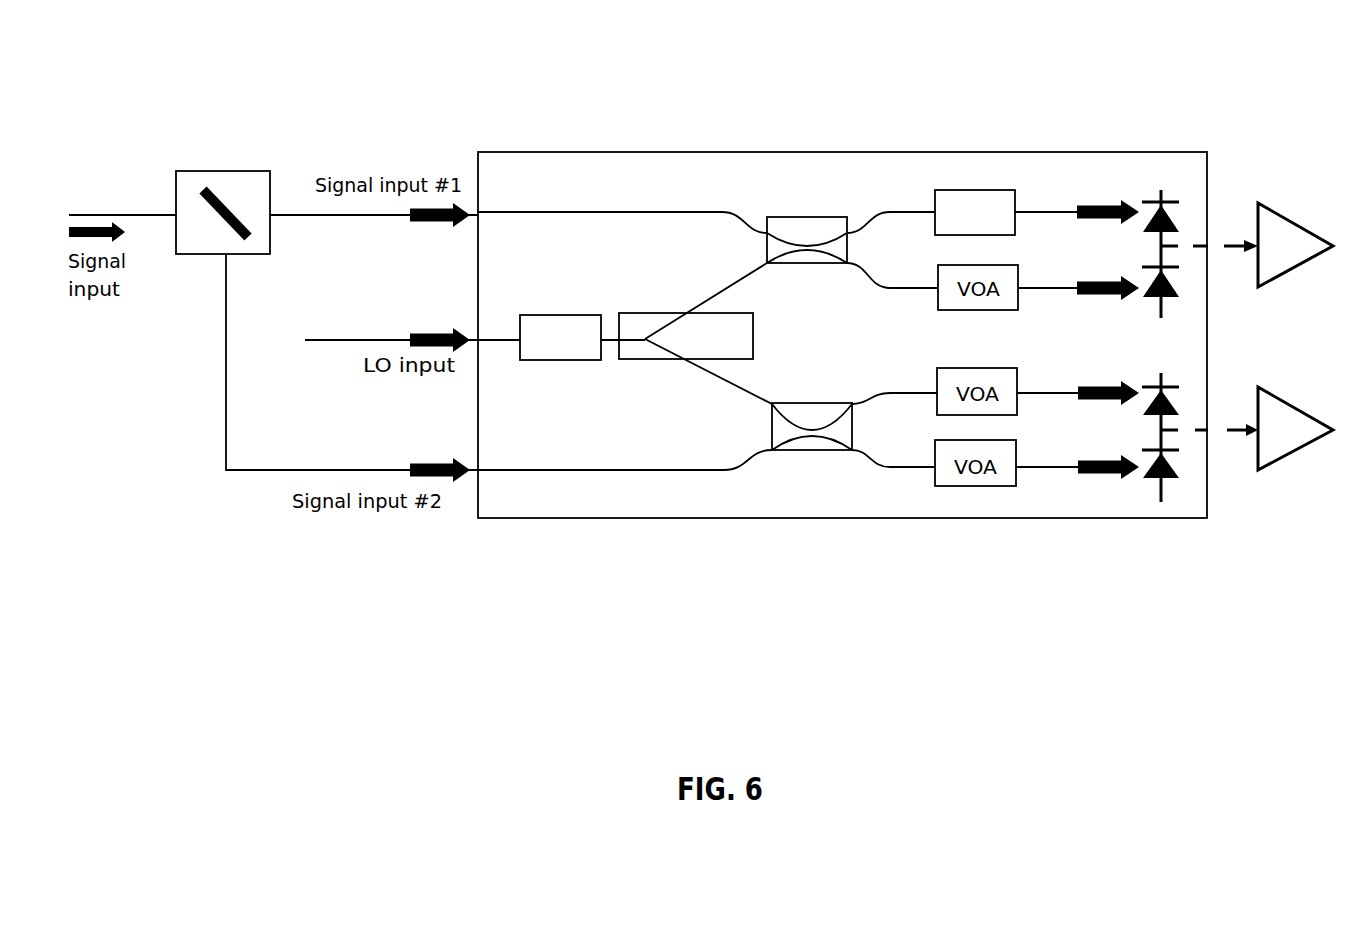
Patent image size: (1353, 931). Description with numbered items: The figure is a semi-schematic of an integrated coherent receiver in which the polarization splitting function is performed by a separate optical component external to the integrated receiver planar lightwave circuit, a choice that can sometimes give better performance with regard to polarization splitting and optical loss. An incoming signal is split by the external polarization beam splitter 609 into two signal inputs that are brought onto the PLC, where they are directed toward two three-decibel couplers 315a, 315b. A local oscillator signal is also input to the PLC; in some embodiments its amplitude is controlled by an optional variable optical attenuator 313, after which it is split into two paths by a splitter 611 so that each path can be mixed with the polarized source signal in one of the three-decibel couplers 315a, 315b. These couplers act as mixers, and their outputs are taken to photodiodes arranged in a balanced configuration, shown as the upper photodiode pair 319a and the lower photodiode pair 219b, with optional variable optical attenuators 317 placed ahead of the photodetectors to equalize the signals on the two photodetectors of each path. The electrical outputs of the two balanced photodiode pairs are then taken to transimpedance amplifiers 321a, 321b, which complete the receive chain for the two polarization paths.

The external polarization splitter 609 is at (270, 192).
The variable optical attenuator 313 is at (563, 315).
The splitter 611 is at (752, 336).
The 3 dB coupler 315a is at (800, 196).
The 3 dB coupler 315b is at (810, 478).
The variable optical attenuators 317 is at (975, 170).
The photodiodes 319a is at (1131, 180).
The balanced photodetector pair (lower) 219b is at (1133, 505).
The TIA 321a is at (1287, 217).
The TIA 321b is at (1287, 402).